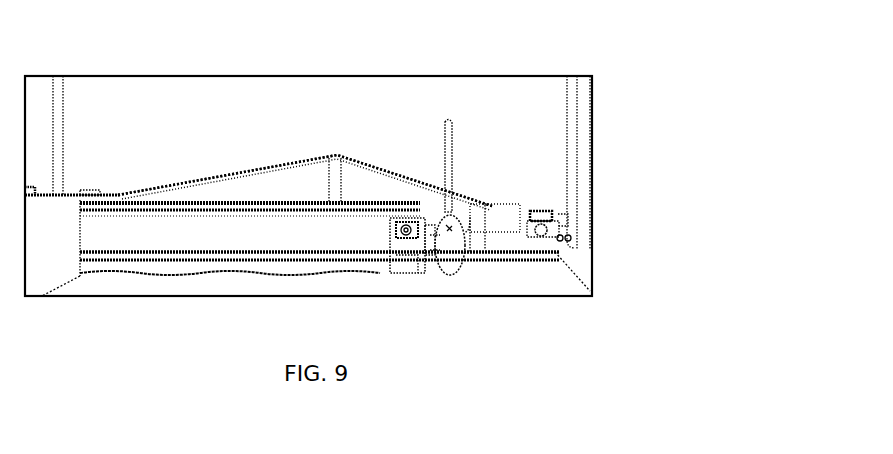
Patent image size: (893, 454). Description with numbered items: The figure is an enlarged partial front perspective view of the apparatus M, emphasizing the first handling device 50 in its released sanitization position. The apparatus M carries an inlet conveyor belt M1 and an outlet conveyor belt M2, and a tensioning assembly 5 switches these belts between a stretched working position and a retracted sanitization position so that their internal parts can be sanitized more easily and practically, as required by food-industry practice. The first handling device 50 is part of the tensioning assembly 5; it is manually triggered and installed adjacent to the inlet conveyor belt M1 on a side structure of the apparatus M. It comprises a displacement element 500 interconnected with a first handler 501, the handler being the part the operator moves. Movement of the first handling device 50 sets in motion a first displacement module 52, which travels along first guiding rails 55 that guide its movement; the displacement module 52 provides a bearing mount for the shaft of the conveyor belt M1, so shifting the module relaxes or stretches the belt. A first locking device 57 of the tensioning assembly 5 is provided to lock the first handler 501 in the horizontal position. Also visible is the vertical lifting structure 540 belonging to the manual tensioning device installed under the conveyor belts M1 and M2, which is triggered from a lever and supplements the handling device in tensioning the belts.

The apparatus M is at (601, 72).
The inlet conveyor belt M1 is at (251, 168).
The outlet conveyor belt M2 is at (305, 180).
The tensioning assembly 5 is at (226, 233).
The vertical lifting structure 540 is at (335, 190).
The first handler 501 is at (447, 146).
The displacement element 500 is at (452, 248).
The first handling device 50 is at (450, 292).
The first locking device 57 is at (406, 233).
The first displacement module 52 is at (510, 220).
The first guiding rails 55 is at (552, 214).